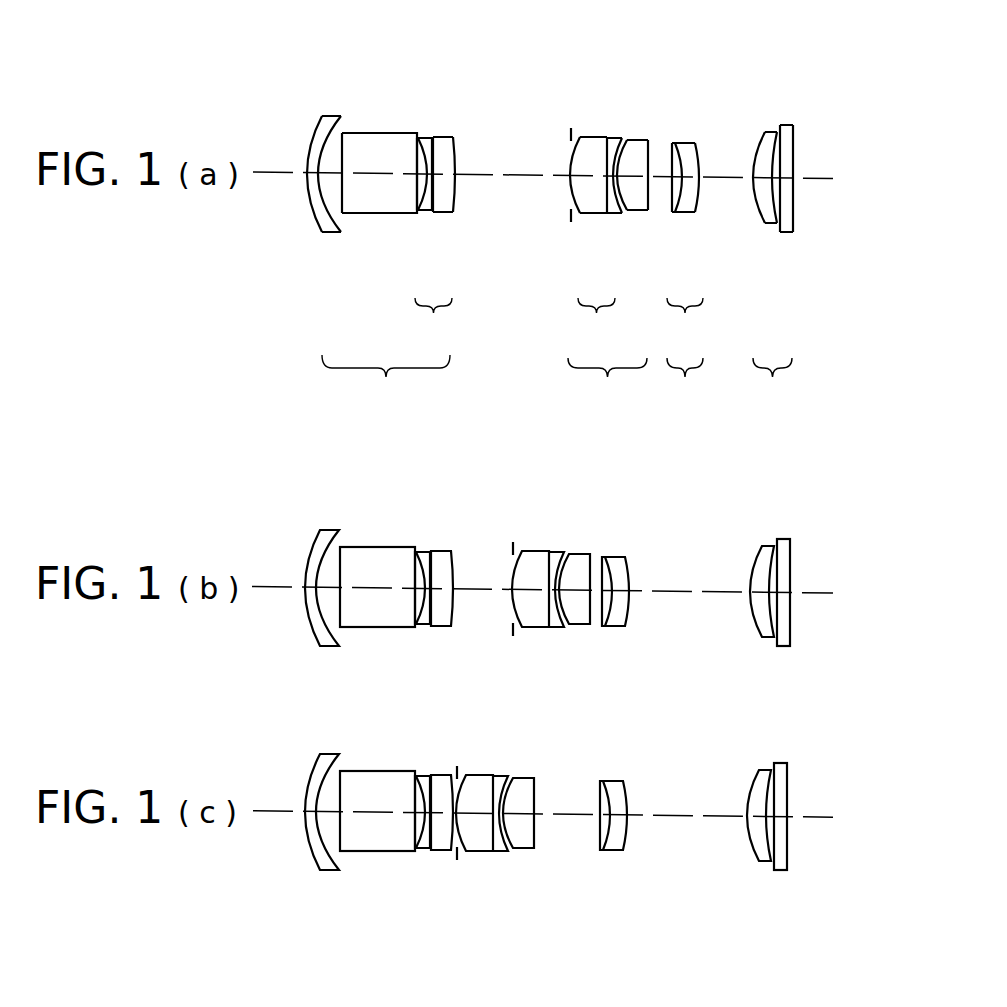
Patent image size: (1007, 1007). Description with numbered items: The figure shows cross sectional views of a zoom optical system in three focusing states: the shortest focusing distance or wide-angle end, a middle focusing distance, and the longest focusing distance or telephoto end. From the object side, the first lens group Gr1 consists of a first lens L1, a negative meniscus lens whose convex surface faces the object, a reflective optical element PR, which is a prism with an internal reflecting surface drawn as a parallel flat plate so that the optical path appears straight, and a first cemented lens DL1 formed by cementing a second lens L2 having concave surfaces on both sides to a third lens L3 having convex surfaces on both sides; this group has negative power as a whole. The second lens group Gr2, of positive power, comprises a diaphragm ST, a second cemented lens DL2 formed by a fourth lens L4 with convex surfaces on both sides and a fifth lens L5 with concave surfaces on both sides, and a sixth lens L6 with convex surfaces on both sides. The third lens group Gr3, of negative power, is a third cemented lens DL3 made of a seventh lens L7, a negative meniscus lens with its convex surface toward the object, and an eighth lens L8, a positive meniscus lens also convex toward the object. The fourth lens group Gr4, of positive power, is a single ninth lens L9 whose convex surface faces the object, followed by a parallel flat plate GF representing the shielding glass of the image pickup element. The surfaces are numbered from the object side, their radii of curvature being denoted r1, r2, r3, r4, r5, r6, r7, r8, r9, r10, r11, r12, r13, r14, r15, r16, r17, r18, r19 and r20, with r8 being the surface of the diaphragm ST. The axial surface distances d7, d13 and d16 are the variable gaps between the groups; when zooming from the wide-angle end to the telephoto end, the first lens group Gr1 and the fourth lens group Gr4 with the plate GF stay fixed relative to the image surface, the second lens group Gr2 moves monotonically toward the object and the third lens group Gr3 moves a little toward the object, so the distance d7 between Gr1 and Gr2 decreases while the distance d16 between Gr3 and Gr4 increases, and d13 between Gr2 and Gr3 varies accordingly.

The first surface radius of curvature r1 is at (312, 170).
The second surface radius of curvature r2 is at (325, 116).
The third surface radius of curvature r3 is at (346, 134).
The fourth surface radius of curvature r4 is at (417, 150).
The fifth surface radius of curvature r5 is at (427, 148).
The sixth surface radius of curvature r6 is at (432, 136).
The seventh surface radius of curvature r7 is at (453, 142).
The eighth surface radius of curvature r8 is at (570, 133).
The ninth surface radius of curvature r9 is at (578, 136).
The tenth surface radius of curvature r10 is at (601, 137).
The eleventh surface radius of curvature r11 is at (617, 137).
The twelfth surface radius of curvature r12 is at (622, 141).
The thirteenth surface radius of curvature r13 is at (650, 142).
The fourteenth surface radius of curvature r14 is at (674, 142).
The fifteenth surface radius of curvature r15 is at (697, 142).
The sixteenth surface radius of curvature r16 is at (700, 143).
The seventeenth surface radius of curvature r17 is at (760, 131).
The eighteenth surface radius of curvature r18 is at (777, 130).
The nineteenth surface radius of curvature r19 is at (782, 125).
The twentieth surface radius of curvature r20 is at (793, 133).
The axial surface distance between first and second lens groups d7 is at (498, 174).
The axial surface distance between second and third lens groups d13 is at (660, 177).
The axial surface distance between third and fourth lens groups d16 is at (727, 177).
The first lens L1 is at (315, 166).
The second lens L2 is at (406, 168).
The third lens L3 is at (456, 171).
The fourth lens L4 is at (576, 171).
The fifth lens L5 is at (604, 145).
The sixth lens L6 is at (644, 174).
The seventh lens L7 is at (712, 149).
The eighth lens L8 is at (696, 212).
The ninth lens L9 is at (788, 169).
The reflective optical element PR is at (378, 179).
The diaphragm ST is at (538, 188).
The parallel flat plate GF is at (820, 174).
The first cemented lens DL1 is at (436, 322).
The second cemented lens DL2 is at (601, 322).
The third cemented lens DL3 is at (687, 322).
The first lens group Gr1 is at (379, 226).
The second lens group Gr2 is at (598, 214).
The third lens group Gr3 is at (708, 207).
The fourth lens group Gr4 is at (801, 225).